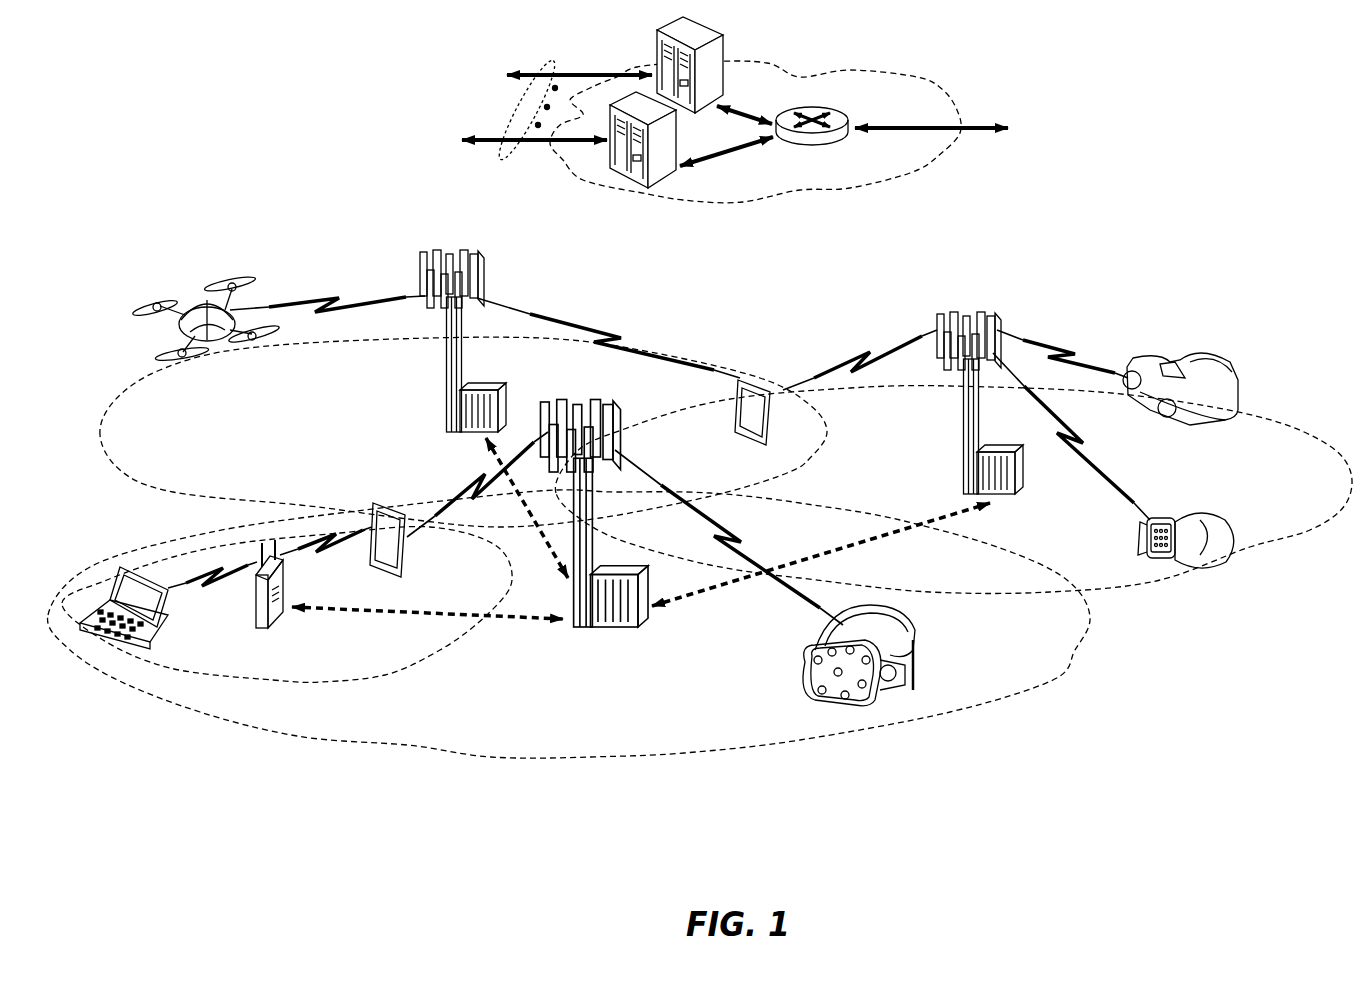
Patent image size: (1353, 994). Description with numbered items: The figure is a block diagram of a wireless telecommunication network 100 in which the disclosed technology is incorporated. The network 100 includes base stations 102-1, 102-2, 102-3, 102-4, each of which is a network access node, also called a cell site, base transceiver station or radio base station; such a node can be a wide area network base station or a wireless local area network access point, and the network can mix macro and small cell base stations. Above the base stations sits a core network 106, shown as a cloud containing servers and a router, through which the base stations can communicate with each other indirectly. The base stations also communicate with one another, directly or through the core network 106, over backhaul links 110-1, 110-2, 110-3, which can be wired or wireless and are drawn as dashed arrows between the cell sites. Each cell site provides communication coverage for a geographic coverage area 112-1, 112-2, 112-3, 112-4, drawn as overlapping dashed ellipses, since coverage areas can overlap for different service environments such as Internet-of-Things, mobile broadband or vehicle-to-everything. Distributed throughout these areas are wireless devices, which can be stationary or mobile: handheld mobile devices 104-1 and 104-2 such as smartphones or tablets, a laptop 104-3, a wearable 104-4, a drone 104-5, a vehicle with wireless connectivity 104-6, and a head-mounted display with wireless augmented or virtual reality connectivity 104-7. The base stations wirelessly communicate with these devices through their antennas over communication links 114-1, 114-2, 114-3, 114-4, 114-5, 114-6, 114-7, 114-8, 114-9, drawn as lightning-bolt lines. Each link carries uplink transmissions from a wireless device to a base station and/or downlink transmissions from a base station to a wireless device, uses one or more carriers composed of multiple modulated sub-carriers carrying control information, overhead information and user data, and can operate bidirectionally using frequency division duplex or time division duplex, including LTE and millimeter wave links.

The wireless telecommunication network 100 is at (1257, 118).
The core network 106 is at (852, 200).
The base station 102-1 is at (580, 630).
The base station 102-2 is at (447, 380).
The base station 102-3 is at (963, 415).
The base station 102-4 is at (255, 608).
The handheld mobile device 104-1 is at (410, 560).
The handheld mobile device 104-2 is at (737, 413).
The laptop 104-3 is at (103, 648).
The wearable 104-4 is at (1160, 517).
The drone 104-5 is at (217, 347).
The vehicle with wireless connectivity 104-6 is at (1200, 365).
The head-mounted display 104-7 is at (905, 652).
The backhaul link 110-1 is at (322, 612).
The backhaul link 110-2 is at (880, 547).
The backhaul link 110-3 is at (545, 537).
The geographic coverage area 112-1 is at (512, 760).
The geographic coverage area 112-2 is at (387, 668).
The geographic coverage area 112-3 is at (173, 493).
The geographic coverage area 112-4 is at (1262, 411).
The communication link 114-1 is at (743, 540).
The communication link 114-2 is at (470, 473).
The communication link 114-3 is at (183, 587).
The communication link 114-4 is at (330, 556).
The communication link 114-5 is at (330, 296).
The communication link 114-6 is at (613, 333).
The communication link 114-7 is at (857, 357).
The communication link 114-8 is at (1087, 455).
The communication link 114-9 is at (1057, 347).